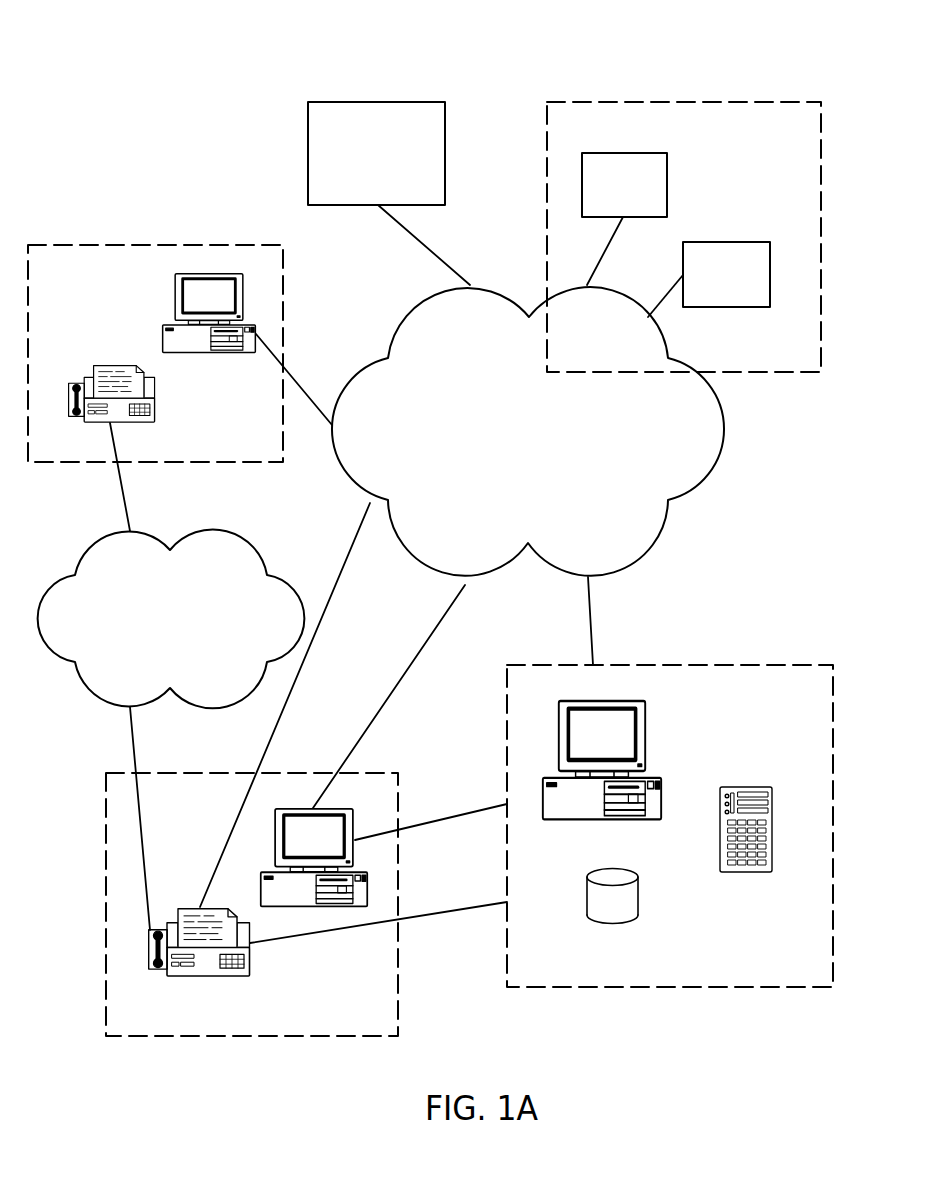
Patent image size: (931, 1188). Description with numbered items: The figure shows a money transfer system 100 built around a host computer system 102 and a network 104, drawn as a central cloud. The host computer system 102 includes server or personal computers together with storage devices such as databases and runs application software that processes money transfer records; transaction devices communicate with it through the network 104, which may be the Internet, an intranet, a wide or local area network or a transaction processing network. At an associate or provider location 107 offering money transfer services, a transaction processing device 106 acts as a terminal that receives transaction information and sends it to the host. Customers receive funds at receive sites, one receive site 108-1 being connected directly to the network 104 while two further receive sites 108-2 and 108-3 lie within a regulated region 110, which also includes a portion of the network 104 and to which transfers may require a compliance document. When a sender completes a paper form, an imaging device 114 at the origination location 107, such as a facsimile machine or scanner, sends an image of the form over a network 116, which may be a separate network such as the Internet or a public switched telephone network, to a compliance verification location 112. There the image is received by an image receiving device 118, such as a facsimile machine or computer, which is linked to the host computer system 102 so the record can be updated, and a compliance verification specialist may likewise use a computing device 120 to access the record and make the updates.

The money transfer system 100 is at (143, 73).
The host computer system 102 is at (823, 979).
The network 104 is at (548, 446).
The transaction processing device 106 is at (192, 273).
The associate or provider location 107 is at (266, 450).
The receive site 108-1 is at (403, 77).
The receive site 108-2 is at (667, 184).
The receive site 108-3 is at (728, 307).
The regulated region 110 is at (601, 139).
The compliance verification location 112 is at (378, 1029).
The imaging device 114 is at (155, 389).
The network 116 is at (190, 632).
The image receiving device 118 is at (198, 980).
The computing device 120 is at (368, 878).